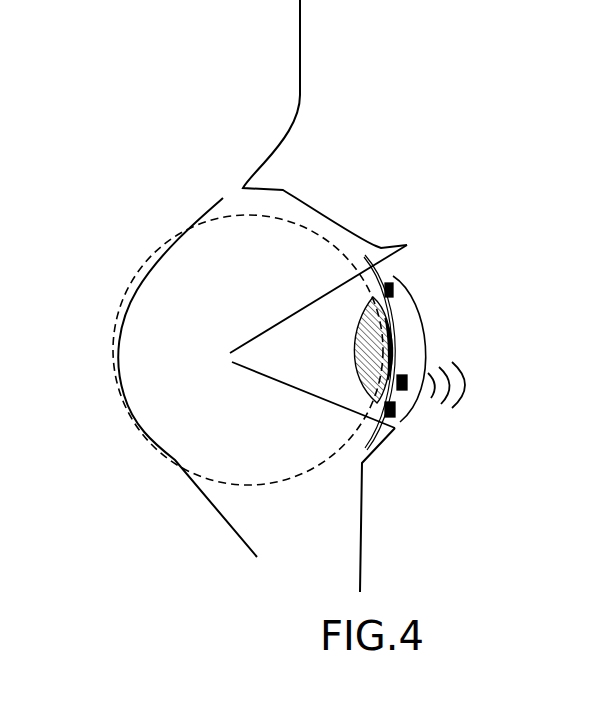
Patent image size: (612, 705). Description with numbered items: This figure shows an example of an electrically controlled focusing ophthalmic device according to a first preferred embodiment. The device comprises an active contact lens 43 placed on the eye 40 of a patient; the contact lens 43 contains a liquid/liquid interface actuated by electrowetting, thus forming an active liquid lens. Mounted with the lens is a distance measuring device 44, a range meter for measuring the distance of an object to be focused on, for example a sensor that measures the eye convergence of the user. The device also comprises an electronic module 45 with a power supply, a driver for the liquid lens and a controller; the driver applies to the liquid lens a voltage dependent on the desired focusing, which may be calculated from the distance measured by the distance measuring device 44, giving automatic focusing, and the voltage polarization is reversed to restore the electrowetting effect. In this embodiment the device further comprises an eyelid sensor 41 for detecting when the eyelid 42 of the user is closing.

The eye 40 is at (133, 418).
The eyelid sensor 41 is at (403, 302).
The eyelid 42 is at (317, 203).
The active contact lens 43 is at (427, 337).
The distance measuring device 44 is at (404, 390).
The electronic module 45 is at (391, 419).